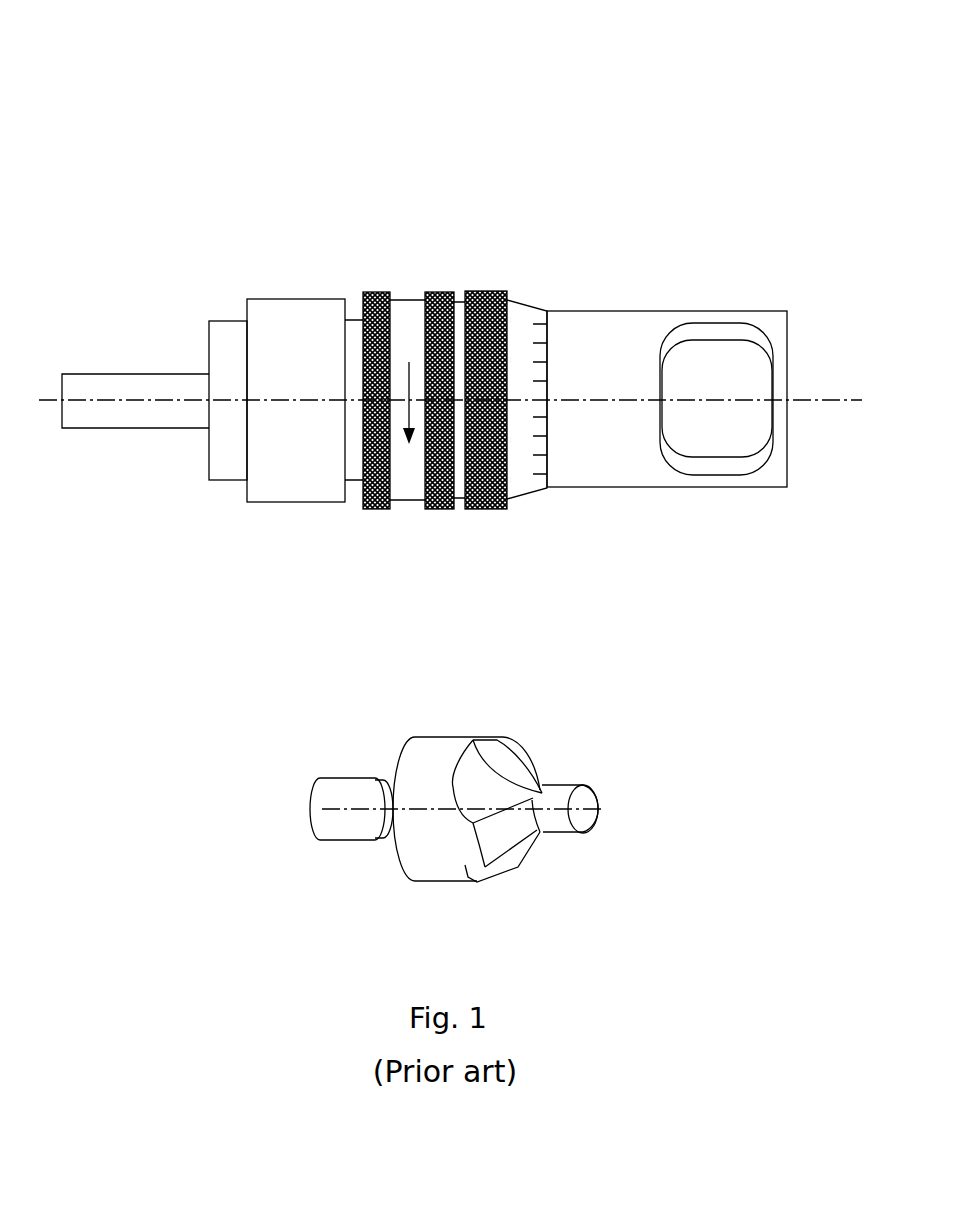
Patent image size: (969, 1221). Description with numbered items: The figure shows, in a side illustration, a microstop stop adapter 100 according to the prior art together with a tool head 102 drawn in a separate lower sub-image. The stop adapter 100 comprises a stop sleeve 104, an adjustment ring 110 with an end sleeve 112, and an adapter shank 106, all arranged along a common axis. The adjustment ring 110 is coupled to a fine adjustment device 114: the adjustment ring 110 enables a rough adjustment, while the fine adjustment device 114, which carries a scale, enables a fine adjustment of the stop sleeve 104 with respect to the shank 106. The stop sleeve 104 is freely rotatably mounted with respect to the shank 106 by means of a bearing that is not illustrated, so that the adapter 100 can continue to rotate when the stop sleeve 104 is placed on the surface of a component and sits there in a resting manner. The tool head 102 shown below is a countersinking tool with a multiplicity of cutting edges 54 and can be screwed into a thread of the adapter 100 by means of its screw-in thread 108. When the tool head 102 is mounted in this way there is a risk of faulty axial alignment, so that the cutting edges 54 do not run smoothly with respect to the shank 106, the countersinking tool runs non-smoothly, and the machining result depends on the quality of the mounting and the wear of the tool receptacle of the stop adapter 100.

The stop adapter 100 is at (697, 186).
The tool head 102 is at (446, 728).
The stop sleeve 104 is at (615, 325).
The adapter shank 106 is at (129, 385).
The screw-in thread 108 is at (337, 790).
The adjustment ring 110 is at (407, 305).
The end sleeve 112 is at (298, 305).
The fine adjustment device 114 is at (521, 312).
The cutting edges 54 is at (523, 765).